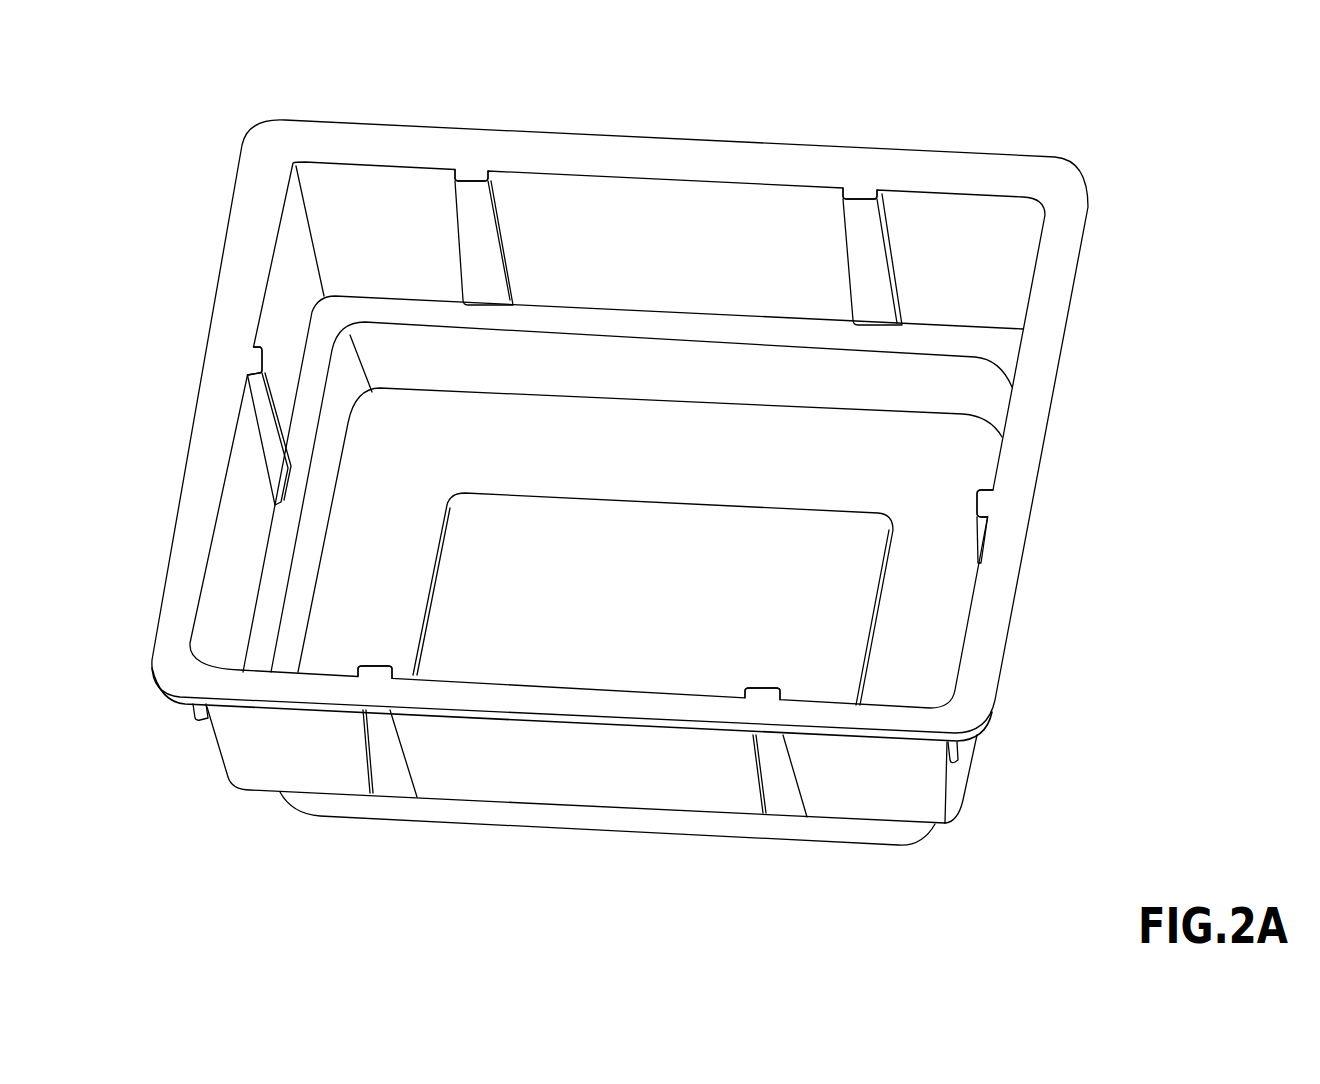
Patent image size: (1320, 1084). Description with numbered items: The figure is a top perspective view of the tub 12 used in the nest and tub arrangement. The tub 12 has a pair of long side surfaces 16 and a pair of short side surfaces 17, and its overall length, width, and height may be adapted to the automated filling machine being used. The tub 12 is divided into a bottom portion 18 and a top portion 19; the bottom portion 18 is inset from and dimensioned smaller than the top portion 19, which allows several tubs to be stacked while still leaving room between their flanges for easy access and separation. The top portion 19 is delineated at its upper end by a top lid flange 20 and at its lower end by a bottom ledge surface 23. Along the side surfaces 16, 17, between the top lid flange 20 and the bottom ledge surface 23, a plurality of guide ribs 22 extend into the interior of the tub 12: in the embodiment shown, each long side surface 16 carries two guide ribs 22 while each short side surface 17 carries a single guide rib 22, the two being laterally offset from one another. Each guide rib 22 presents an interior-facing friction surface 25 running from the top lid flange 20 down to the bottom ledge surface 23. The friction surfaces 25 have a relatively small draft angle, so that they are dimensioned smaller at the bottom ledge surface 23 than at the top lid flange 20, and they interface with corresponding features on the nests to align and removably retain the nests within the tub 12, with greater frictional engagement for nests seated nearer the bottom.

The tub 12 is at (680, 478).
The long side surface 16 is at (460, 785).
The short side surface 17 is at (963, 752).
The bottom portion 18 is at (687, 840).
The top portion 19 is at (1068, 348).
The top lid flange 20 is at (617, 150).
The guide rib 22 is at (470, 167).
The bottom ledge surface 23 is at (637, 323).
The friction surface 25 is at (470, 232).